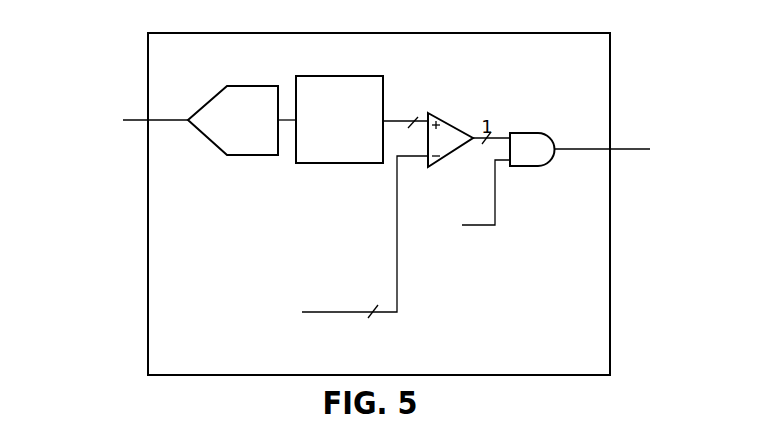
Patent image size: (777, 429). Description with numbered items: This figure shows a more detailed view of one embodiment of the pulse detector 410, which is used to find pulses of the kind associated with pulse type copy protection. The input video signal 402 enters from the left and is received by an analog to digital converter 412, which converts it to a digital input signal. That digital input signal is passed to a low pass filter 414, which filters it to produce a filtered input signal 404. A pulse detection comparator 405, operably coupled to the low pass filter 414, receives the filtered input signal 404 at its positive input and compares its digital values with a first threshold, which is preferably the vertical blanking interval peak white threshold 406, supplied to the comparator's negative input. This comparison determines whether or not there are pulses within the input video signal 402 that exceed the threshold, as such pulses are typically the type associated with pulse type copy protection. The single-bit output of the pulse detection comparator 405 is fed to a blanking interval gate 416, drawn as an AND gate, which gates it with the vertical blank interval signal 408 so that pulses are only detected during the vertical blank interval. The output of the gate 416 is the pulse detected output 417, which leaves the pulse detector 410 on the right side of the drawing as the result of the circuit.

The input video signal 402 is at (103, 123).
The filtered input signal 404 is at (397, 113).
The pulse detection comparator 405 is at (447, 135).
The vertical blanking interval peak white threshold 406 is at (301, 250).
The vertical blank interval signal 408 is at (456, 216).
The pulse detector 410 is at (379, 204).
The analog to digital converter 412 is at (233, 120).
The low pass filter 414 is at (339, 119).
The blanking interval gate 416 is at (527, 148).
The pulse detected output 417 is at (647, 163).